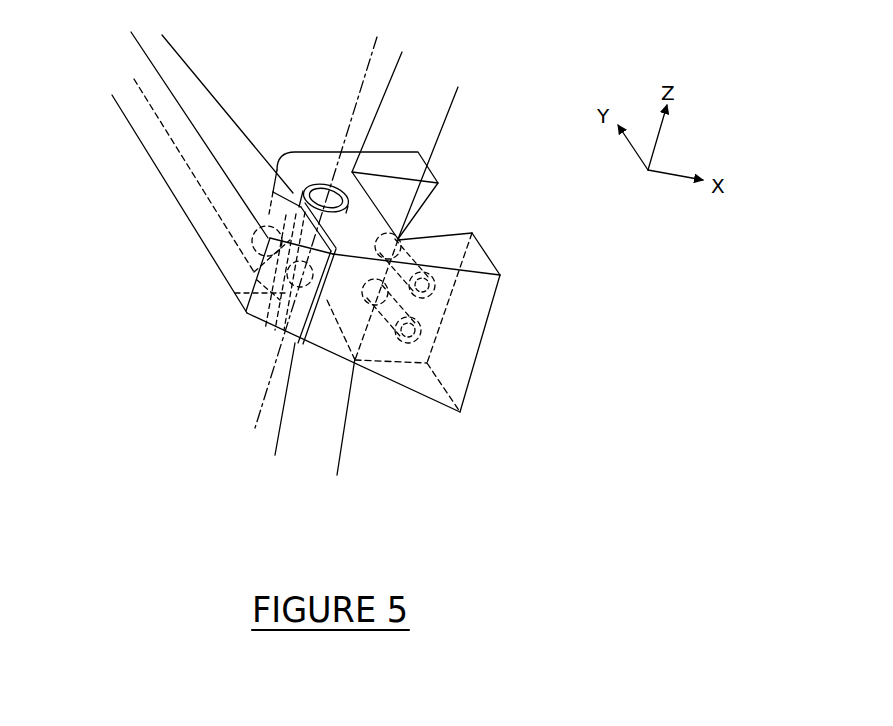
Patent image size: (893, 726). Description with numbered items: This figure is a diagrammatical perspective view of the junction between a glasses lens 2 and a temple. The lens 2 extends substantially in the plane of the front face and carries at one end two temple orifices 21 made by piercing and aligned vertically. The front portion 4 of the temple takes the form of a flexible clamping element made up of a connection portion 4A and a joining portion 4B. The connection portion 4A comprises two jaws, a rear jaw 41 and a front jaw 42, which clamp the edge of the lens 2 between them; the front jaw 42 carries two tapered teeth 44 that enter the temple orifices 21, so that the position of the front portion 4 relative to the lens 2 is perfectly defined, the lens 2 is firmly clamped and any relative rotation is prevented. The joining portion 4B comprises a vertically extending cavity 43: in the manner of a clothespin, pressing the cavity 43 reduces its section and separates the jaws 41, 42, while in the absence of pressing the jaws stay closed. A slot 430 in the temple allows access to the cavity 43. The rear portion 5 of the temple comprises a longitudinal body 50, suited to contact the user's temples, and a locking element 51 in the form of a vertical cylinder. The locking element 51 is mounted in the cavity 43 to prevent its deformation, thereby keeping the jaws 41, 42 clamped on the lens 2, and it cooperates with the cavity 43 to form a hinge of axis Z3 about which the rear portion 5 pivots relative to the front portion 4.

The lens 2 is at (402, 262).
The front portion 4 is at (386, 266).
The connection portion 4A is at (457, 339).
The joining portion 4B is at (326, 137).
The rear portion 5 is at (202, 165).
The temple orifices 21 is at (423, 263).
The rear jaw 41 is at (428, 212).
The front jaw 42 is at (408, 372).
The cavity 43 is at (293, 294).
The teeth 44 is at (425, 297).
The longitudinal body 50 is at (189, 76).
The locking element 51 is at (320, 193).
The slot 430 is at (295, 160).
The hinge axis Z3 is at (324, 219).